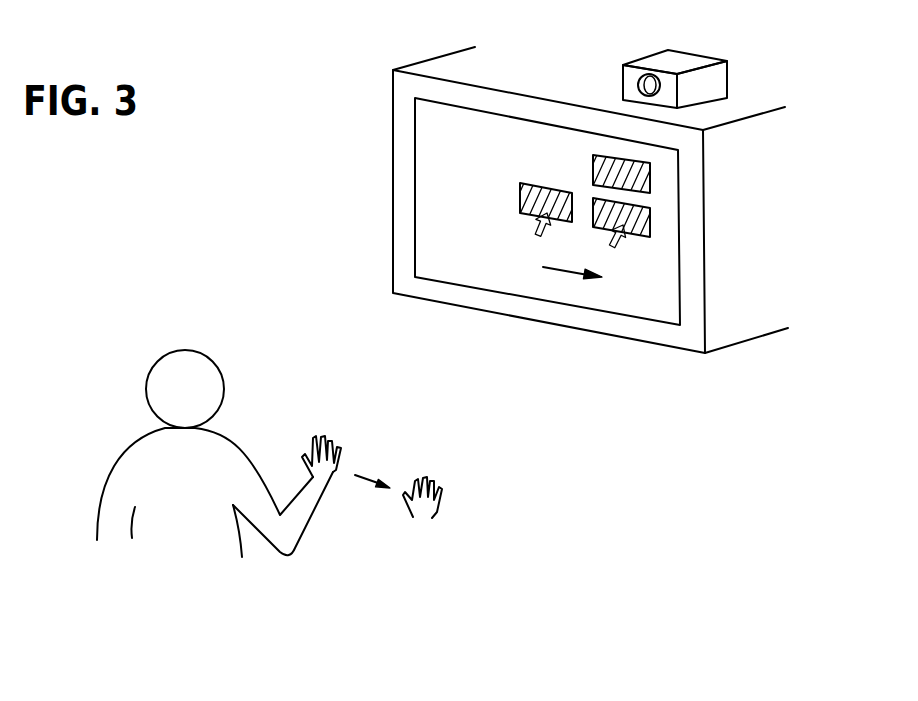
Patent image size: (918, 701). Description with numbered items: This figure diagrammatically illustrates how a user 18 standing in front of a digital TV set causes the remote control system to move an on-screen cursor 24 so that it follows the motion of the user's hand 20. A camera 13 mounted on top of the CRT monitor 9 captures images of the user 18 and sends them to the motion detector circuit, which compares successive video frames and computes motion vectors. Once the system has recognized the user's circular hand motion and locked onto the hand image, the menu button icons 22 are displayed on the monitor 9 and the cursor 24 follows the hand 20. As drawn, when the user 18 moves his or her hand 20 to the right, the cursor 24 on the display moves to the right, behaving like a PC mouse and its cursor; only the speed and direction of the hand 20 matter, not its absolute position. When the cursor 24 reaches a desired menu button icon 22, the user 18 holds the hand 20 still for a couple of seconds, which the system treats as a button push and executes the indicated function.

The CRT monitor 9 is at (738, 344).
The camera 13 is at (695, 53).
The user 18 is at (188, 352).
The hand 20 is at (340, 440).
The menu button icon 22 is at (637, 265).
The cursor 24 is at (607, 230).